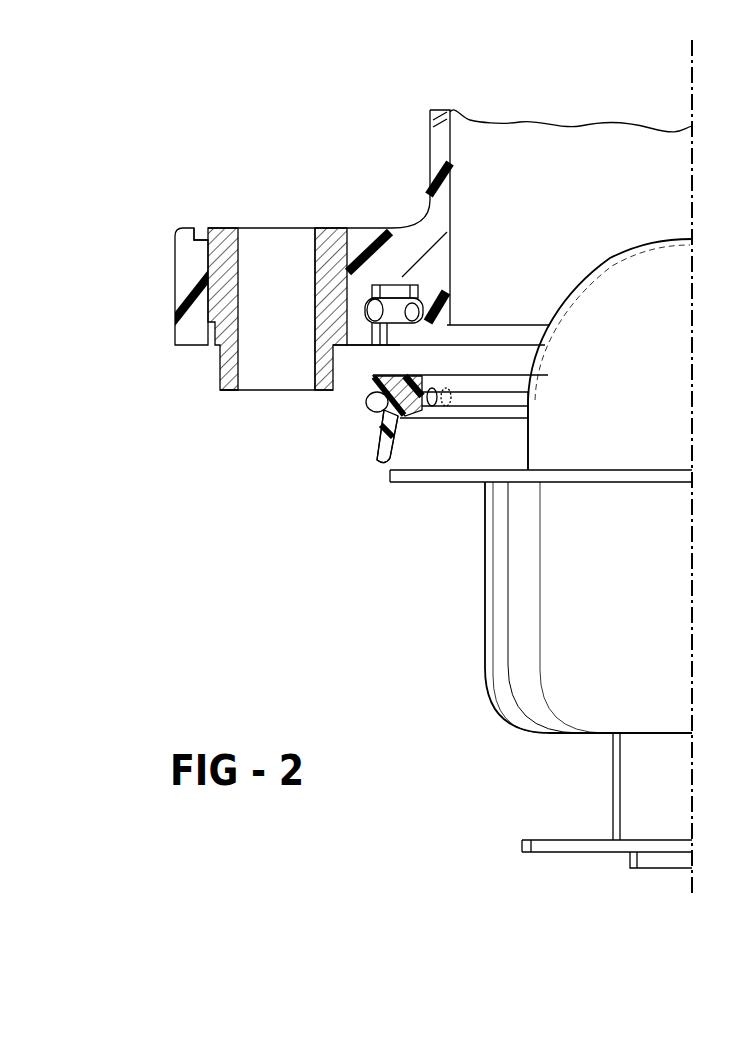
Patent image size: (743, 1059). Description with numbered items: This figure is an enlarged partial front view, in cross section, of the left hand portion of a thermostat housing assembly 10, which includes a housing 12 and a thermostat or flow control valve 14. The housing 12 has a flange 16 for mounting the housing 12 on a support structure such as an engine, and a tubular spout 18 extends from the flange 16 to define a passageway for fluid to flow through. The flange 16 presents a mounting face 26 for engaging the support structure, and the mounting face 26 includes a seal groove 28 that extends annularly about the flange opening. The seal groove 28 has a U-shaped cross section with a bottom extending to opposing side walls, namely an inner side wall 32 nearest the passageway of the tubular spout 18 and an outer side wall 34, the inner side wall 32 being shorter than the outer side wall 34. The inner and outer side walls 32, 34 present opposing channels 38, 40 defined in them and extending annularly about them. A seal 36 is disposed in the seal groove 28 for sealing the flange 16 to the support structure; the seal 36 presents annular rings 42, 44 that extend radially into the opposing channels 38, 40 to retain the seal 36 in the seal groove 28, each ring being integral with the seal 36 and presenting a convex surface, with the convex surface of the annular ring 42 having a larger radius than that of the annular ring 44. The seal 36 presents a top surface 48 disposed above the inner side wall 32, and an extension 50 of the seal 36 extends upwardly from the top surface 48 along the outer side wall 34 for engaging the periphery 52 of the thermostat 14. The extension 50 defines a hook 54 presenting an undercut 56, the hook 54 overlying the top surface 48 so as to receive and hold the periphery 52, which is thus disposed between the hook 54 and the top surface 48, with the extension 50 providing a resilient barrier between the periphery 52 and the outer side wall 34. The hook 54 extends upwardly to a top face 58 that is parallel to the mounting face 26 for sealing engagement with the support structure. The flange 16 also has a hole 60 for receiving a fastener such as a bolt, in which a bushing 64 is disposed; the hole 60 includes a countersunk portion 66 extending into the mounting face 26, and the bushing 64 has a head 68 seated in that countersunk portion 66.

The thermostat housing assembly 10 is at (393, 117).
The housing 12 is at (428, 160).
The thermostat 14 is at (565, 565).
The flange 16 is at (187, 262).
The tubular spout 18 is at (444, 128).
The mounting face 26 is at (183, 347).
The seal groove 28 is at (400, 278).
The inner side wall 32 is at (443, 255).
The outer side wall 34 is at (322, 337).
The seal 36 is at (381, 372).
The channel 38 is at (372, 313).
The channel 40 is at (410, 322).
The annular ring 42 is at (367, 393).
The annular ring 44 is at (432, 389).
The top surface 48 is at (410, 417).
The extension 50 is at (378, 435).
The periphery 52 is at (462, 483).
The hook 54 is at (386, 455).
The undercut 56 is at (398, 440).
The top face 58 is at (380, 465).
The hole 60 is at (210, 262).
The bushing 64 is at (288, 386).
The countersunk portion 66 is at (197, 240).
The head 68 is at (332, 247).